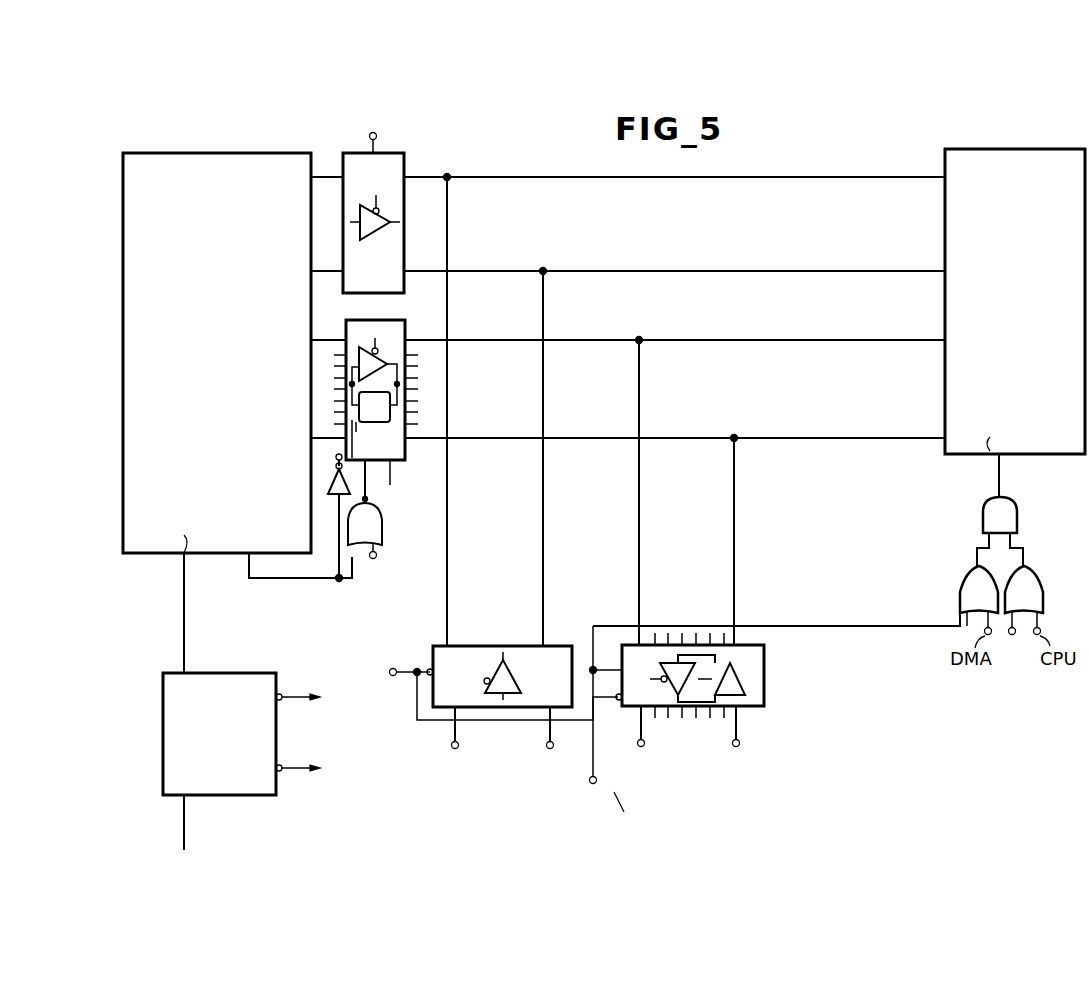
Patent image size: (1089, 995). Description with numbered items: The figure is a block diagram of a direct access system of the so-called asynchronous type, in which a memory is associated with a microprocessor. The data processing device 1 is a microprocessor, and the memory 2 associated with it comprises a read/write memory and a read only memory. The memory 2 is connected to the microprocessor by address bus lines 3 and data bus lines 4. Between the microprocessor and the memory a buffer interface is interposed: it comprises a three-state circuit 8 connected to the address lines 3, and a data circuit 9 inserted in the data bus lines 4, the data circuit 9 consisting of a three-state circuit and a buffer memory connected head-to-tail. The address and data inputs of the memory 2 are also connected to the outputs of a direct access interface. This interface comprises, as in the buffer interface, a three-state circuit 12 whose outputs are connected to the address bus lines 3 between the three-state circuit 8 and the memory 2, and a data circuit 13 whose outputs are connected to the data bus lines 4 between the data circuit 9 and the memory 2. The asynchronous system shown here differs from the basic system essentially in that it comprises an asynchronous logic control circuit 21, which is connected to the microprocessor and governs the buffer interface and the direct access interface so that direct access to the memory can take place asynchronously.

The data processing device 1 is at (237, 501).
The memory 2 is at (1015, 323).
The address bus lines 3 is at (640, 177).
The data bus lines 4 is at (670, 340).
The three-state circuit 8 is at (395, 282).
The data circuit 9 is at (398, 452).
The three-state circuit 12 is at (530, 672).
The data circuit 13 is at (758, 695).
The asynchronous logic control circuit 21 is at (265, 734).